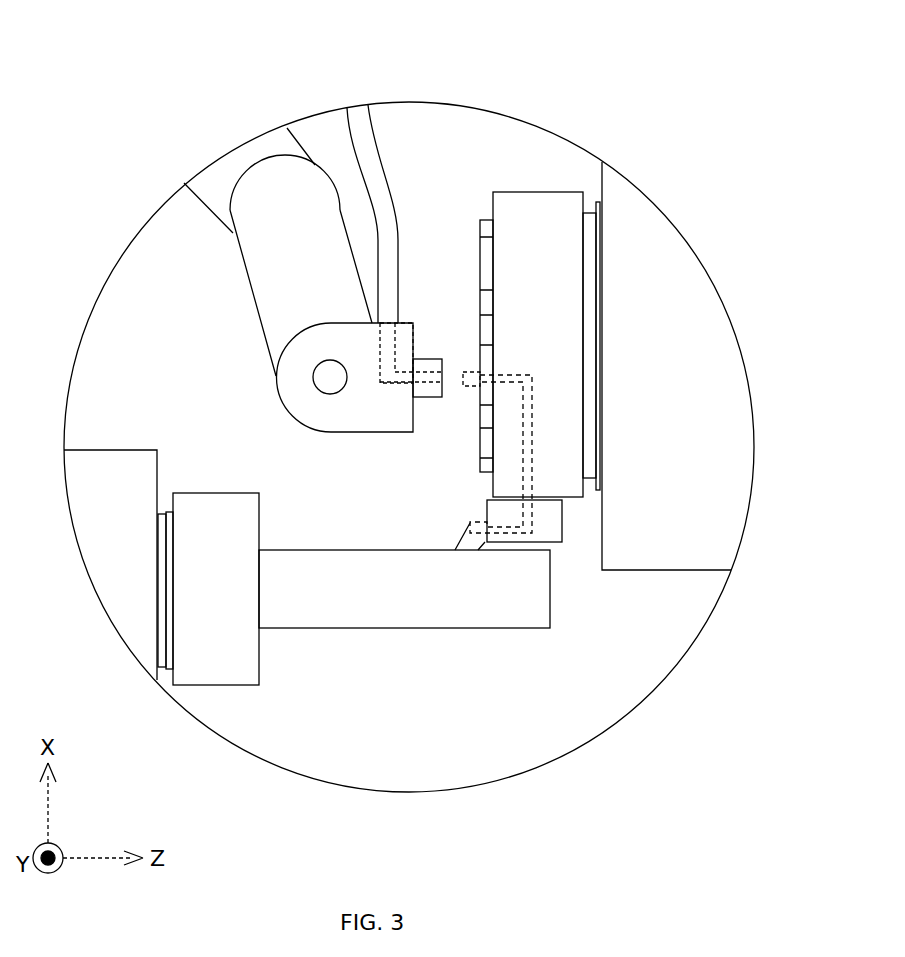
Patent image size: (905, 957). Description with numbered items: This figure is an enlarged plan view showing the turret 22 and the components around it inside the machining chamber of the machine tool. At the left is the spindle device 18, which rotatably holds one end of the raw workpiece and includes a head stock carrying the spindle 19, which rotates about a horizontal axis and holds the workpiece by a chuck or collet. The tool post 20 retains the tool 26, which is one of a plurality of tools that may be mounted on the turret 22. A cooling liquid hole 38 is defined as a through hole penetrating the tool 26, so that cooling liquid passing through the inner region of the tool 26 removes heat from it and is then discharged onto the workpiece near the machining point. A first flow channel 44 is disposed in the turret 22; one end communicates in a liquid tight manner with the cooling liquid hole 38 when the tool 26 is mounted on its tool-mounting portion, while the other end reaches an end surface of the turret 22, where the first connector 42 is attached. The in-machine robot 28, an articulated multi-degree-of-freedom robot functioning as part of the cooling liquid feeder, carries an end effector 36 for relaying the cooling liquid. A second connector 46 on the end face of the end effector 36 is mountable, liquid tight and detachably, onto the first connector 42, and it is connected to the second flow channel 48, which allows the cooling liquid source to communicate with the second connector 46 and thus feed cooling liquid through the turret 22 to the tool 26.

The spindle device 18 is at (117, 437).
The spindle 19 is at (203, 493).
The tool post 20 is at (695, 290).
The turret 22 is at (533, 190).
The tool 26 is at (563, 530).
The in-machine robot 28 is at (232, 272).
The end effector 36 is at (330, 433).
The cooling liquid hole 38 is at (507, 540).
The first connector 42 is at (467, 372).
The first flow channel 44 is at (532, 430).
The second connector 46 is at (430, 398).
The second flow channel 48 is at (385, 172).